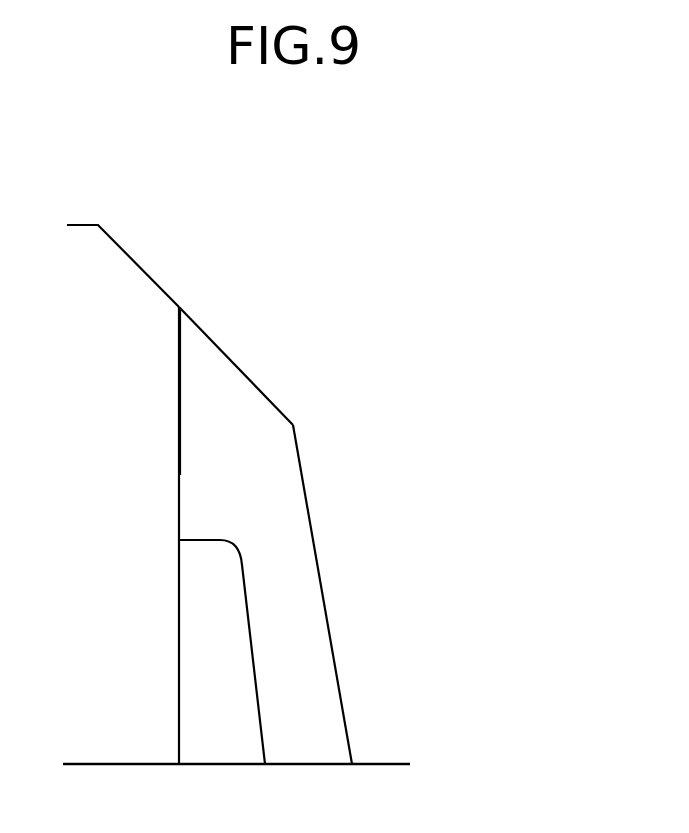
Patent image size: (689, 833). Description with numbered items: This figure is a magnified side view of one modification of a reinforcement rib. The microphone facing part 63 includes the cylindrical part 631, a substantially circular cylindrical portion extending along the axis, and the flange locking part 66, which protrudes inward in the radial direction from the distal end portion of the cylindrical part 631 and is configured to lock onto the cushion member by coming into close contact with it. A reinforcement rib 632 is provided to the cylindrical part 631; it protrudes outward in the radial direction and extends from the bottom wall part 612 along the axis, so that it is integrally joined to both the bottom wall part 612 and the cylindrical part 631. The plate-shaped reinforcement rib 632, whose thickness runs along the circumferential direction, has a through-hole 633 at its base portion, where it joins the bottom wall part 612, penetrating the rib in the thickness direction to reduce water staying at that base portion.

The flange locking part 66 is at (82, 240).
The microphone facing part 63 is at (173, 300).
The cylindrical part 631 is at (180, 475).
The reinforcement rib 632 is at (295, 542).
The through-hole 633 is at (232, 680).
The bottom wall part 612 is at (382, 764).